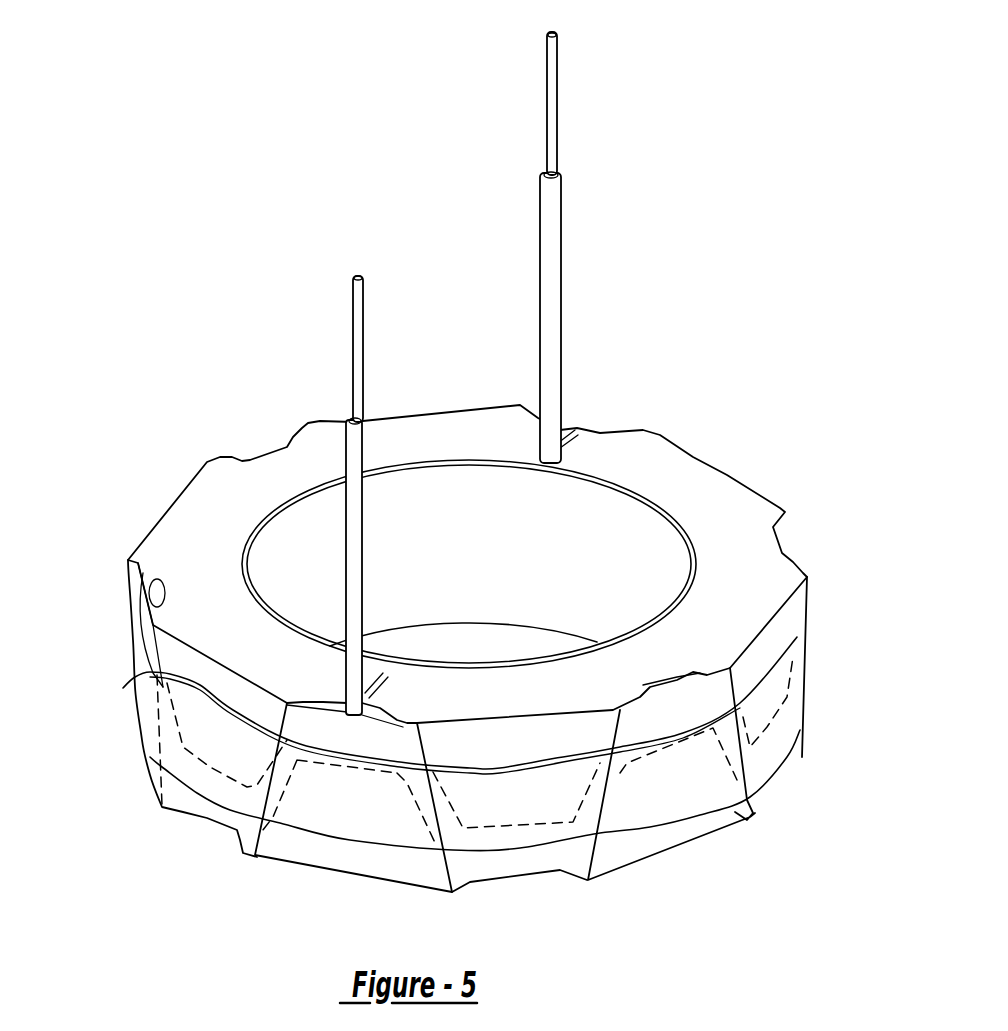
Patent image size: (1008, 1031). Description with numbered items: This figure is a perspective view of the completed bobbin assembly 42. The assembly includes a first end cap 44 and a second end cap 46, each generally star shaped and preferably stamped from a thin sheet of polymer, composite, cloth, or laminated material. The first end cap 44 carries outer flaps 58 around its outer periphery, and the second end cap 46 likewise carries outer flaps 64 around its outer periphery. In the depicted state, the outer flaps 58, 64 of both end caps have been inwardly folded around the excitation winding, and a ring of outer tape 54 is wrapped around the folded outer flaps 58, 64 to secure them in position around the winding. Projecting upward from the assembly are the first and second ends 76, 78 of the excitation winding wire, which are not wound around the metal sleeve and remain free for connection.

The bobbin assembly 42 is at (800, 473).
The first end cap 44 is at (673, 465).
The second end cap 46 is at (790, 757).
The ring of outer tape 54 is at (603, 793).
The outer flaps 58 is at (203, 680).
The outer flaps 64 is at (357, 858).
The first end 76 is at (353, 297).
The second end 78 is at (555, 55).